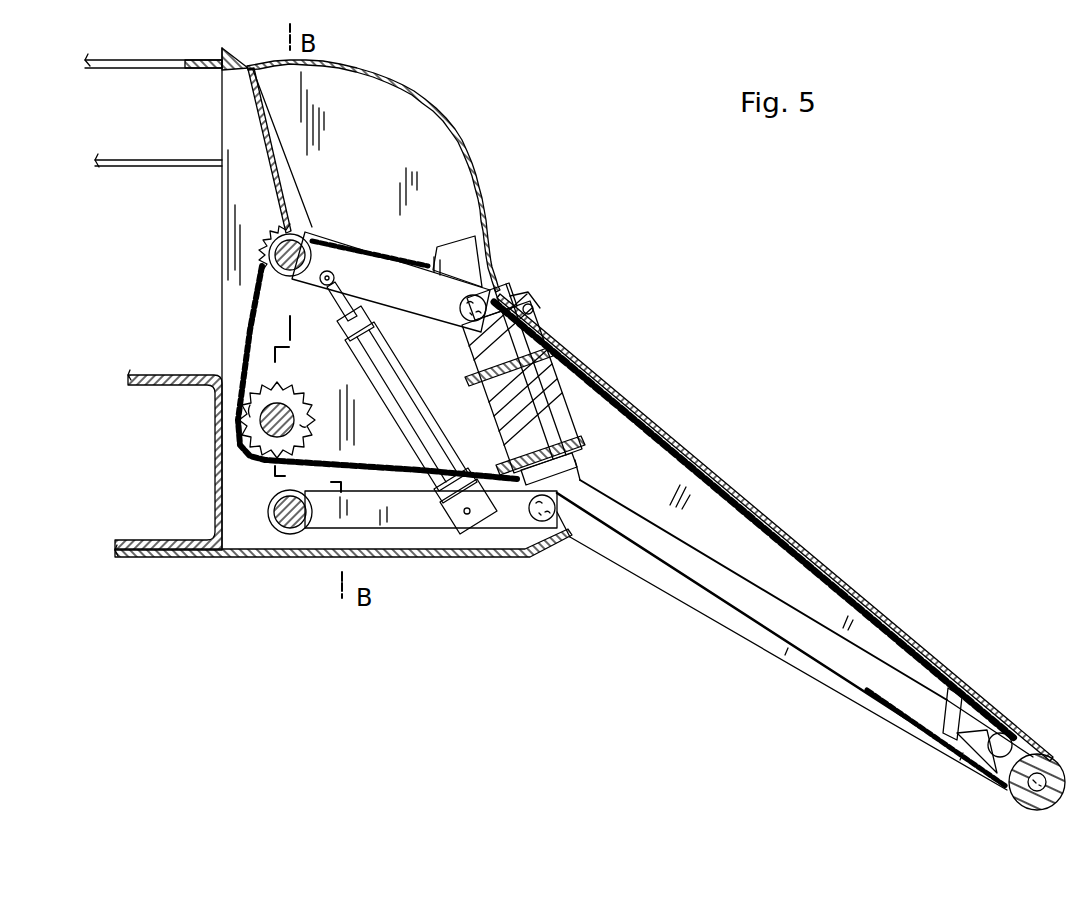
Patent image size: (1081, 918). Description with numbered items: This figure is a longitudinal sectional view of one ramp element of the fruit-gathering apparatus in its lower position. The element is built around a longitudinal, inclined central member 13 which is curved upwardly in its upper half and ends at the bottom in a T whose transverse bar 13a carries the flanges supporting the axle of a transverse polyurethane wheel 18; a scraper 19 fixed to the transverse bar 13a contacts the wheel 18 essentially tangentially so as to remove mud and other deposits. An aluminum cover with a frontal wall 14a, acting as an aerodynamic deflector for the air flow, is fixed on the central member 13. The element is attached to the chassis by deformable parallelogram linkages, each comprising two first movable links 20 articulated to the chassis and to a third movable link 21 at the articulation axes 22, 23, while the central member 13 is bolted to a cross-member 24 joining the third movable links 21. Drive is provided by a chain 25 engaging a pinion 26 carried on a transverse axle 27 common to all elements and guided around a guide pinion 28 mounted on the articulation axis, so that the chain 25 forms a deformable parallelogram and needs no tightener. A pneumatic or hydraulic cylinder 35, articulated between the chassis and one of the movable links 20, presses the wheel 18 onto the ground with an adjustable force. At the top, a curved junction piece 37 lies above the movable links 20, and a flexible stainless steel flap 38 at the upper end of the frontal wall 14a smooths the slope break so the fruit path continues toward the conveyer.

The central member 13 is at (713, 580).
The transverse bar 13a is at (940, 733).
The frontal wall 14a is at (733, 488).
The transverse wheel 18 is at (1053, 765).
The scraper 19 is at (1000, 743).
The first movable link 20 is at (367, 293).
The third movable link 21 is at (530, 312).
The articulation axis 22 is at (288, 532).
The articulation axis 23 is at (542, 520).
The cross-member 24 is at (557, 400).
The chain 25 is at (613, 393).
The pinion 26 is at (257, 448).
The transverse axle 27 is at (273, 417).
The guide pinion 28 is at (287, 288).
The cylinder 35 is at (435, 495).
The junction piece 37 is at (451, 141).
The flexible flap 38 is at (502, 265).